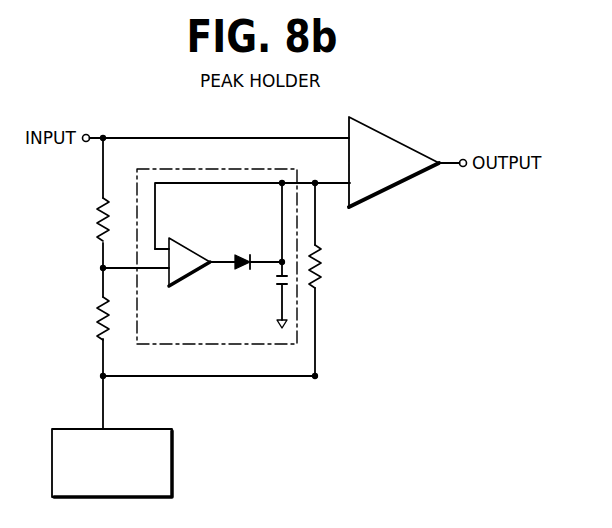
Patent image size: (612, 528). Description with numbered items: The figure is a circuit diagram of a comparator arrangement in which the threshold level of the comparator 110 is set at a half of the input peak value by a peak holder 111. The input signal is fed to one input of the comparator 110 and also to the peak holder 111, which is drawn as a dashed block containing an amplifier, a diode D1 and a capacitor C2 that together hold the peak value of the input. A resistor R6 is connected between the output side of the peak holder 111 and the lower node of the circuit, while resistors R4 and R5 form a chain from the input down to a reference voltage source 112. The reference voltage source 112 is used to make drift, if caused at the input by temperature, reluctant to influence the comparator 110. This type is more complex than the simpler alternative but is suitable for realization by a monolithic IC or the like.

The comparator 110 is at (379, 172).
The peak holder 111 is at (243, 207).
The reference voltage source 112 is at (172, 444).
The resistor R4 is at (87, 219).
The resistor R5 is at (85, 318).
The resistor R6 is at (326, 281).
The diode D1 is at (239, 250).
The capacitor C2 is at (268, 291).